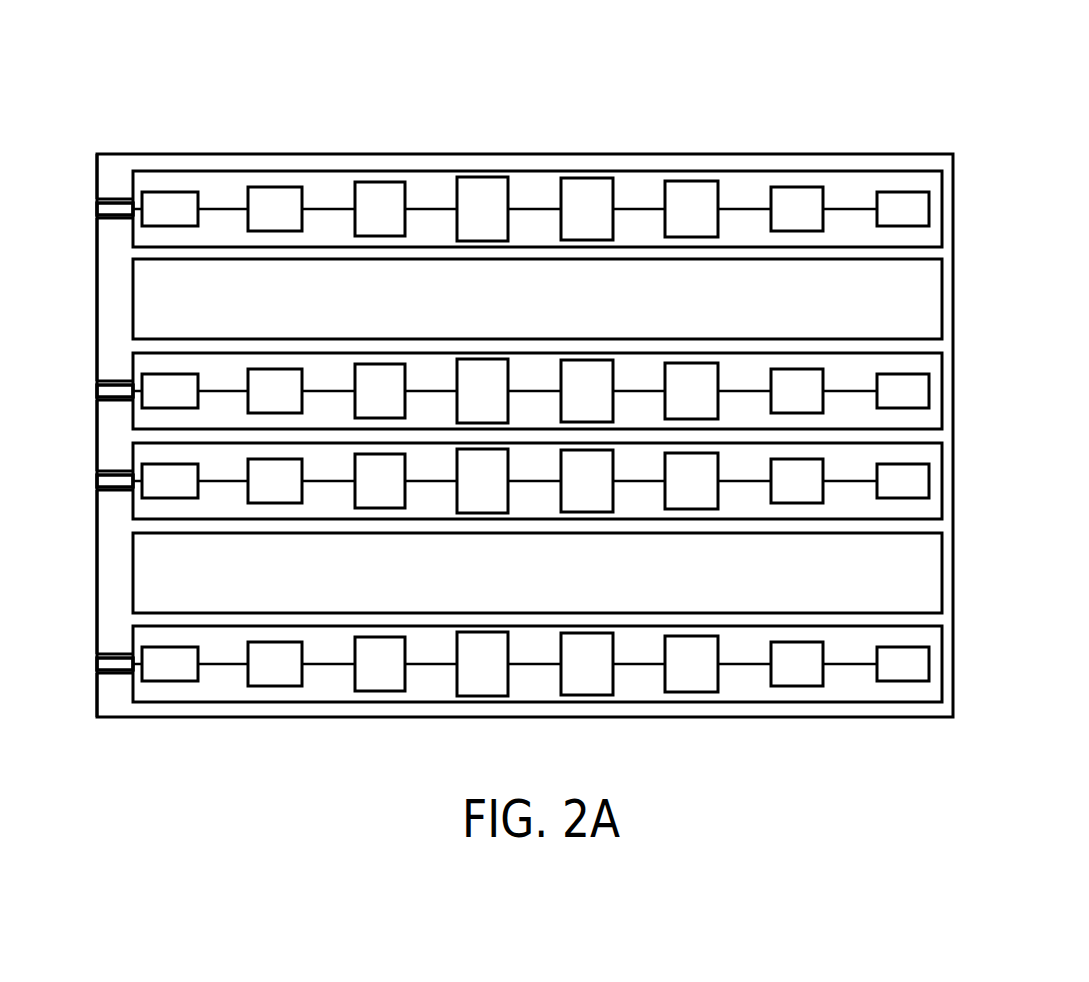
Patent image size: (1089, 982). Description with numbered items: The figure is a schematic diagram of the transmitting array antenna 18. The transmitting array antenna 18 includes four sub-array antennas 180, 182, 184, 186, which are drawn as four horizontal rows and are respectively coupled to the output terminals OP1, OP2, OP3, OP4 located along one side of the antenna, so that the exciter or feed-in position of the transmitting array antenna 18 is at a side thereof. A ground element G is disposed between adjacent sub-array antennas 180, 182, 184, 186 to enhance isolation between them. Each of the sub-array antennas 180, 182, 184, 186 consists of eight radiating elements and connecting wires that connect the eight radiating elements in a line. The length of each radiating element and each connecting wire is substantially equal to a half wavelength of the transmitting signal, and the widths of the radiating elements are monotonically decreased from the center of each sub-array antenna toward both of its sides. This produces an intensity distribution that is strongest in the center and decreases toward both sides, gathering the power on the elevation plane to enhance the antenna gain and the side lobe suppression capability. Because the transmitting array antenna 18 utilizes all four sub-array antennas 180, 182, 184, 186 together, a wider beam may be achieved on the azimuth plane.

The transmitting array antenna 18 is at (925, 75).
The sub-array antenna 180 is at (937, 181).
The sub-array antenna 182 is at (937, 362).
The sub-array antenna 184 is at (937, 453).
The sub-array antenna 186 is at (937, 644).
The ground element G is at (950, 277).
The output terminal OP1 is at (88, 209).
The output terminal OP2 is at (88, 392).
The output terminal OP3 is at (88, 481).
The output terminal OP4 is at (88, 664).